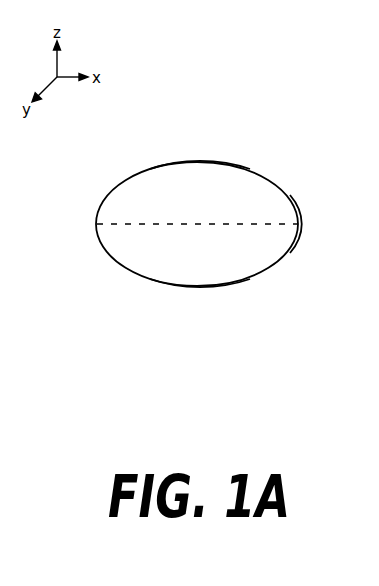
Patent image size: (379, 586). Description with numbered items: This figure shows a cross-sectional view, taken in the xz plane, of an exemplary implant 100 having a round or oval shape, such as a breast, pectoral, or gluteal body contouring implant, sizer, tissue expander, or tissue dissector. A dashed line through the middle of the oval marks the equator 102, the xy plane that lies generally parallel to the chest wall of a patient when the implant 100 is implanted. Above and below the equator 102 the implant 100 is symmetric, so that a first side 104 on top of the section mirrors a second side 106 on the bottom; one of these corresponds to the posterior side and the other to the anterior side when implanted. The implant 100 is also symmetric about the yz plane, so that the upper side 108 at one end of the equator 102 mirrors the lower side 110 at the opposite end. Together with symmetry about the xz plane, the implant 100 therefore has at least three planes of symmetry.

The implant 100 is at (122, 283).
The equator 102 is at (128, 214).
The first side 104 is at (200, 163).
The second side 106 is at (194, 287).
The upper side 108 is at (298, 224).
The lower side 110 is at (97, 224).